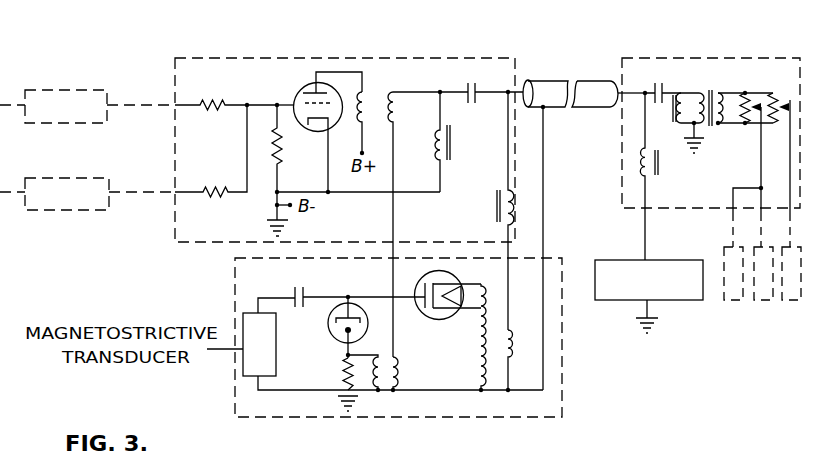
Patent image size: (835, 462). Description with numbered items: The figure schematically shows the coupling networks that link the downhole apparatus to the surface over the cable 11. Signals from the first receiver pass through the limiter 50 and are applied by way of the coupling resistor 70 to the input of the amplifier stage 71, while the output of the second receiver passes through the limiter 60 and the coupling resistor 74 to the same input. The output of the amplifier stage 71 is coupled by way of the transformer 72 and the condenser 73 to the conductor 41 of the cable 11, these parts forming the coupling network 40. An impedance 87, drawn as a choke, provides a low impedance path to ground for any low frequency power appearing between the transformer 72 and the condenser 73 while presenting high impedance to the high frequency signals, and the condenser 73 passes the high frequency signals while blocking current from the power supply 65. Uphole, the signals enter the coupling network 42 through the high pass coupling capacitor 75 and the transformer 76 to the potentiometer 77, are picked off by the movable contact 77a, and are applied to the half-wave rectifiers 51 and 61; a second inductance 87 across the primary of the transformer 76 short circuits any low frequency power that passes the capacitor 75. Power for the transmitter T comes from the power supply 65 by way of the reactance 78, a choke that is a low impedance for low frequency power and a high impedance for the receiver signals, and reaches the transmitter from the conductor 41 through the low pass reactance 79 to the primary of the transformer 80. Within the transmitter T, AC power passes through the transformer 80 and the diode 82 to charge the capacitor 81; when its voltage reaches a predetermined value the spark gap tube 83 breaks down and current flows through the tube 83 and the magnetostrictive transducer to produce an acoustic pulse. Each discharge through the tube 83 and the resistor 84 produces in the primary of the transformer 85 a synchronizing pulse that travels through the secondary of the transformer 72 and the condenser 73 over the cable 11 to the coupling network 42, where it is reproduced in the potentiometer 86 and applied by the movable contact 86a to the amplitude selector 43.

The limiter 50 is at (70, 92).
The limiter 60 is at (70, 180).
The coupling network 40 is at (434, 59).
The coupling resistor 70 is at (213, 95).
The coupling resistor 74 is at (213, 182).
The amplifier stage 71 is at (304, 82).
The transformer 72 is at (378, 95).
The condenser 73 is at (472, 90).
The impedance 87 is at (457, 141).
The low pass reactance 79 is at (492, 212).
The conductor 41 is at (523, 82).
The cable 11 is at (558, 80).
The uphole coupling network 42 is at (736, 55).
The high pass coupling capacitor 75 is at (666, 88).
The transformer 76 is at (711, 92).
The potentiometer 77 is at (744, 98).
The movable contact 77a is at (756, 103).
The potentiometer 86 is at (784, 105).
The movable contact 86a is at (790, 133).
The reactance 78 is at (637, 171).
The power supply 65 is at (618, 262).
The half-wave rectifier 61 is at (727, 301).
The half-wave rectifier 51 is at (760, 301).
The amplitude selector 43 is at (789, 301).
The transmitter T is at (562, 338).
The capacitor 81 is at (306, 293).
The tube 83 is at (332, 338).
The resistor 84 is at (343, 373).
The transformer 85 is at (387, 356).
The diode 82 is at (426, 321).
The transformer 80 is at (487, 343).